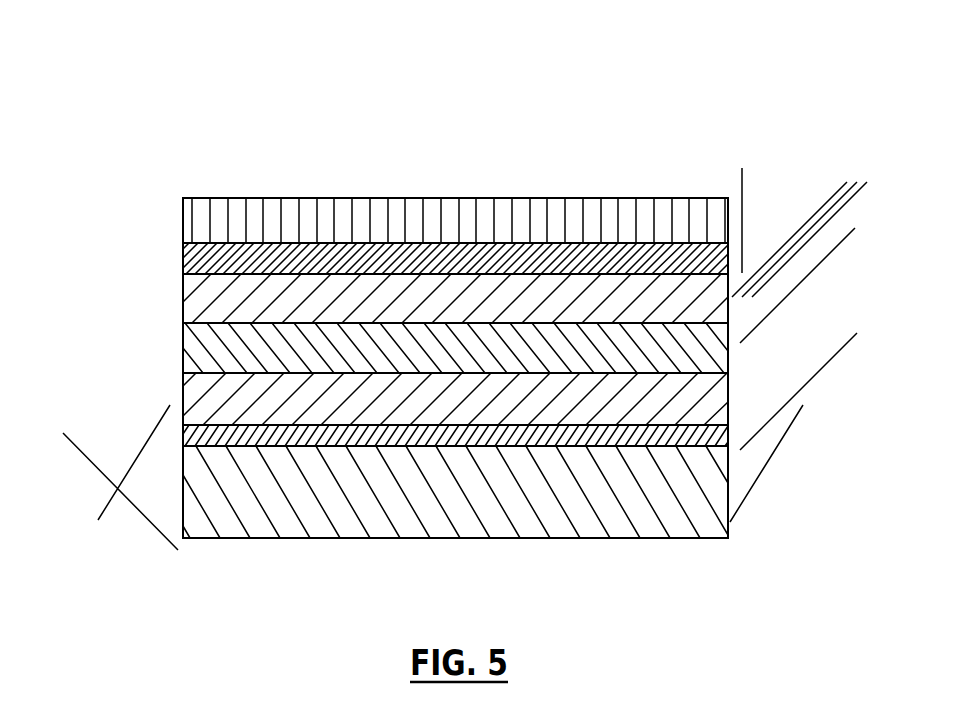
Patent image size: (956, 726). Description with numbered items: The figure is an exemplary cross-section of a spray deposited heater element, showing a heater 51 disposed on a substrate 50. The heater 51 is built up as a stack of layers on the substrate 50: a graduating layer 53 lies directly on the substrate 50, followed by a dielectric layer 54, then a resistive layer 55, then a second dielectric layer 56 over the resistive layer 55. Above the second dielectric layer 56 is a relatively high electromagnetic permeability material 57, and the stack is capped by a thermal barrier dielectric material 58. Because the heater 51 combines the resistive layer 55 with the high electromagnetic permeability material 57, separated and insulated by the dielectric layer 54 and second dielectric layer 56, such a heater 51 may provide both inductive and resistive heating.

The substrate 50 is at (183, 508).
The heater 51 is at (480, 150).
The graduating layer 53 is at (728, 437).
The dielectric layer 54 is at (183, 407).
The resistive layer 55 is at (728, 347).
The second dielectric layer 56 is at (183, 302).
The relatively high electromagnetic permeability material 57 is at (728, 261).
The thermal barrier dielectric material 58 is at (183, 227).